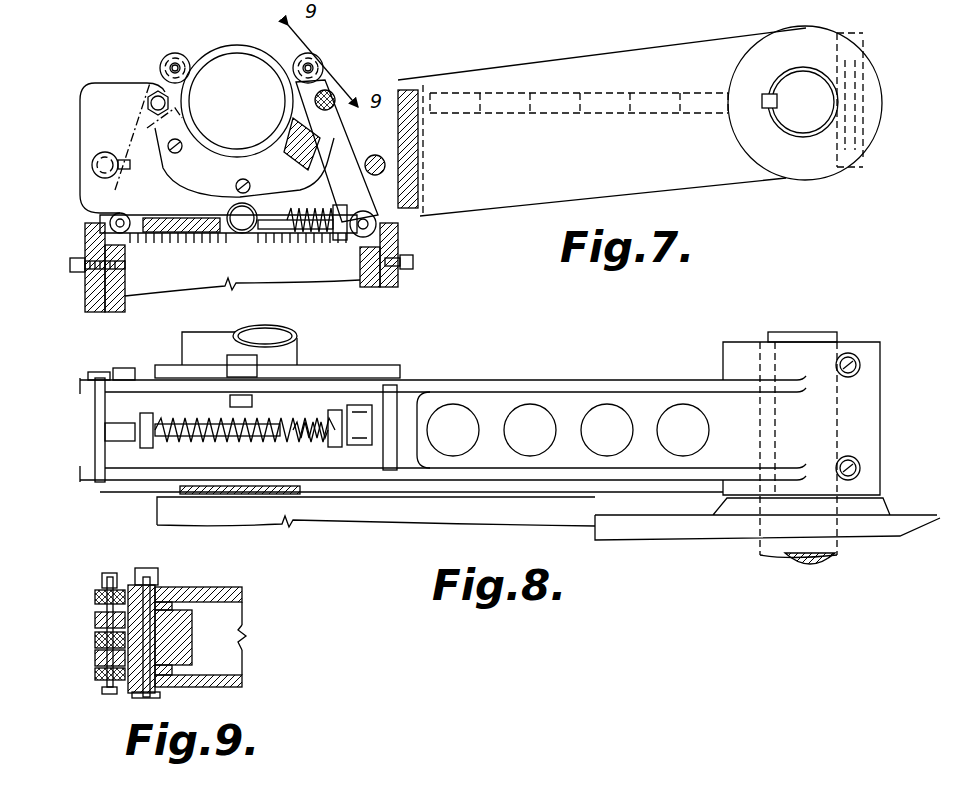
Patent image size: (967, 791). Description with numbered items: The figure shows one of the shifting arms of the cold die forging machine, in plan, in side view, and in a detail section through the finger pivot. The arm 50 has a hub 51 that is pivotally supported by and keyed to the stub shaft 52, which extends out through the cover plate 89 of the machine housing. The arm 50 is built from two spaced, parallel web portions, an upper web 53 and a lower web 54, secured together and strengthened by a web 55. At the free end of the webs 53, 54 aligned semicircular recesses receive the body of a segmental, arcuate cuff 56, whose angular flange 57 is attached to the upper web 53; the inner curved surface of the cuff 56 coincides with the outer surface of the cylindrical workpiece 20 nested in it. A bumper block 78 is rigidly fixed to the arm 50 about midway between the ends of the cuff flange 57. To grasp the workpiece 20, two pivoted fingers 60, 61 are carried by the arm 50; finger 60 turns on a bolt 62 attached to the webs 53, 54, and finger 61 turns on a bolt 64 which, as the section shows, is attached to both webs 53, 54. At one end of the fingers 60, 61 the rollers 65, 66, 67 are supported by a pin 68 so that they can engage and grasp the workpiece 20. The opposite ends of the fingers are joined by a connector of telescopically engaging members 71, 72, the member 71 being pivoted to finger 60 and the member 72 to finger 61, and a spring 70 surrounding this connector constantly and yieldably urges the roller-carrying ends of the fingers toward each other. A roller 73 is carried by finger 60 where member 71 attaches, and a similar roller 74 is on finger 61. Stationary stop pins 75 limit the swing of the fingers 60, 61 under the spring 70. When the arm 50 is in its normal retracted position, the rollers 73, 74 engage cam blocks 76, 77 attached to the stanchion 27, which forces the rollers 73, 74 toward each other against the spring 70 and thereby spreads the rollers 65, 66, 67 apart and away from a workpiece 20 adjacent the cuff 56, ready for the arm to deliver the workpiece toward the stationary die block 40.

In FIG. 7, the cylindrical workpiece 20 is at (240, 45).
In FIG. 8, the cylindrical workpiece 20 is at (297, 336).
In FIG. 7, the stanchion 27 is at (115, 300).
In FIG. 8, the stationary die block 40 is at (375, 522).
In FIG. 7, the shifting arm 50 is at (512, 208).
In FIG. 8, the shifting arm 50 is at (494, 410).
In FIG. 9, the shifting arm 50 is at (290, 656).
In FIG. 7, the hub 51 is at (758, 152).
In FIG. 8, the hub 51 is at (865, 412).
In FIG. 7, the stub shaft 52 is at (797, 76).
In FIG. 8, the stub shaft 52 is at (816, 332).
In FIG. 7, the upper web portion 53 is at (585, 62).
In FIG. 8, the upper web portion 53 is at (575, 380).
In FIG. 9, the upper web portion 53 is at (222, 587).
In FIG. 8, the lower web portion 54 is at (620, 496).
In FIG. 9, the lower web portion 54 is at (242, 683).
In FIG. 7, the web 55 is at (425, 150).
In FIG. 8, the web 55 is at (645, 405).
In FIG. 7, the cuff 56 is at (290, 126).
In FIG. 8, the cuff 56 is at (240, 462).
In FIG. 7, the cuff flange 57 is at (202, 170).
In FIG. 8, the cuff flange 57 is at (318, 366).
In FIG. 7, the finger 60 is at (150, 80).
In FIG. 7, the finger 61 is at (333, 88).
In FIG. 9, the finger 61 is at (192, 627).
In FIG. 7, the bolt 62 is at (148, 104).
In FIG. 7, the bolt 64 is at (335, 96).
In FIG. 9, the bolt 64 is at (148, 590).
In FIG. 7, the roller 65 is at (175, 53).
In FIG. 9, the roller 65 is at (100, 592).
In FIG. 9, the roller 66 is at (95, 640).
In FIG. 9, the roller 67 is at (95, 676).
In FIG. 7, the pin 68 is at (165, 56).
In FIG. 9, the pin 68 is at (95, 616).
In FIG. 7, the spring 70 is at (270, 236).
In FIG. 8, the spring 70 is at (215, 438).
In FIG. 7, the telescoping connector member 71 is at (190, 236).
In FIG. 8, the telescoping connector member 71 is at (205, 440).
In FIG. 7, the telescoping connector member 72 is at (310, 236).
In FIG. 8, the telescoping connector member 72 is at (306, 437).
In FIG. 7, the roller 73 is at (122, 236).
In FIG. 8, the roller 73 is at (105, 432).
In FIG. 7, the roller 74 is at (358, 238).
In FIG. 8, the roller 74 is at (392, 395).
In FIG. 7, the stop pin 75 is at (92, 165).
In FIG. 8, the stop pin 75 is at (390, 385).
In FIG. 7, the cam block 76 is at (82, 256).
In FIG. 7, the cam block 77 is at (400, 246).
In FIG. 7, the bumper block 78 is at (240, 233).
In FIG. 8, the bumper block 78 is at (240, 355).
In FIG. 8, the cover plate 89 is at (875, 508).